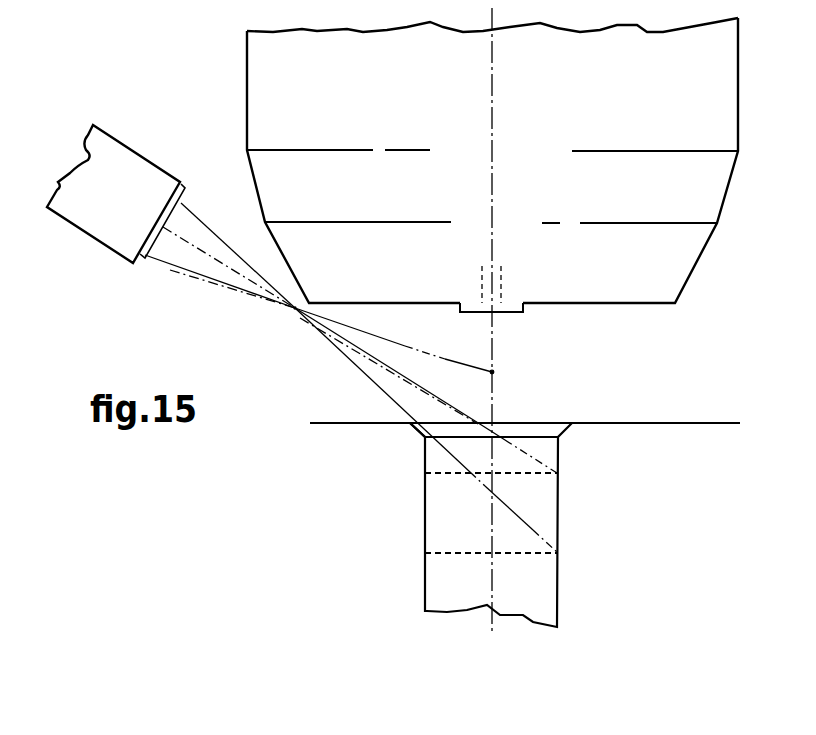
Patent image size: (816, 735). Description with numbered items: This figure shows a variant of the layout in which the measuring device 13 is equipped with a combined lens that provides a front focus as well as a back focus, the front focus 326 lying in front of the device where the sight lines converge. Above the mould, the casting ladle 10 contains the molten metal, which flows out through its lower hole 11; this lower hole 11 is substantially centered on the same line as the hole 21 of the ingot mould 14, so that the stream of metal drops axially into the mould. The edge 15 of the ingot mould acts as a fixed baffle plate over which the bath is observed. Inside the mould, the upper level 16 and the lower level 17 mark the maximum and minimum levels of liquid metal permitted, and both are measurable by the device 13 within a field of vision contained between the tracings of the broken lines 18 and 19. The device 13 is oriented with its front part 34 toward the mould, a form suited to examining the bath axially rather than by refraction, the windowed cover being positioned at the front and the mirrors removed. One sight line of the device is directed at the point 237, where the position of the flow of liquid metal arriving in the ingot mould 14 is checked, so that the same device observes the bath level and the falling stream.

The casting ladle 10 is at (271, 83).
The lower hole 11 is at (492, 319).
The device 13 is at (80, 246).
The ingot mould 14 is at (600, 437).
The edge of the ingot mould 15 is at (409, 439).
The upper level 16 is at (570, 474).
The lower level 17 is at (570, 552).
The broken line 18 is at (370, 377).
The broken line 19 is at (357, 349).
The hole of the ingot mould 21 is at (507, 412).
The front part of the container 34 is at (195, 196).
The flow-position check point 237 is at (532, 351).
The front focus 326 is at (294, 315).